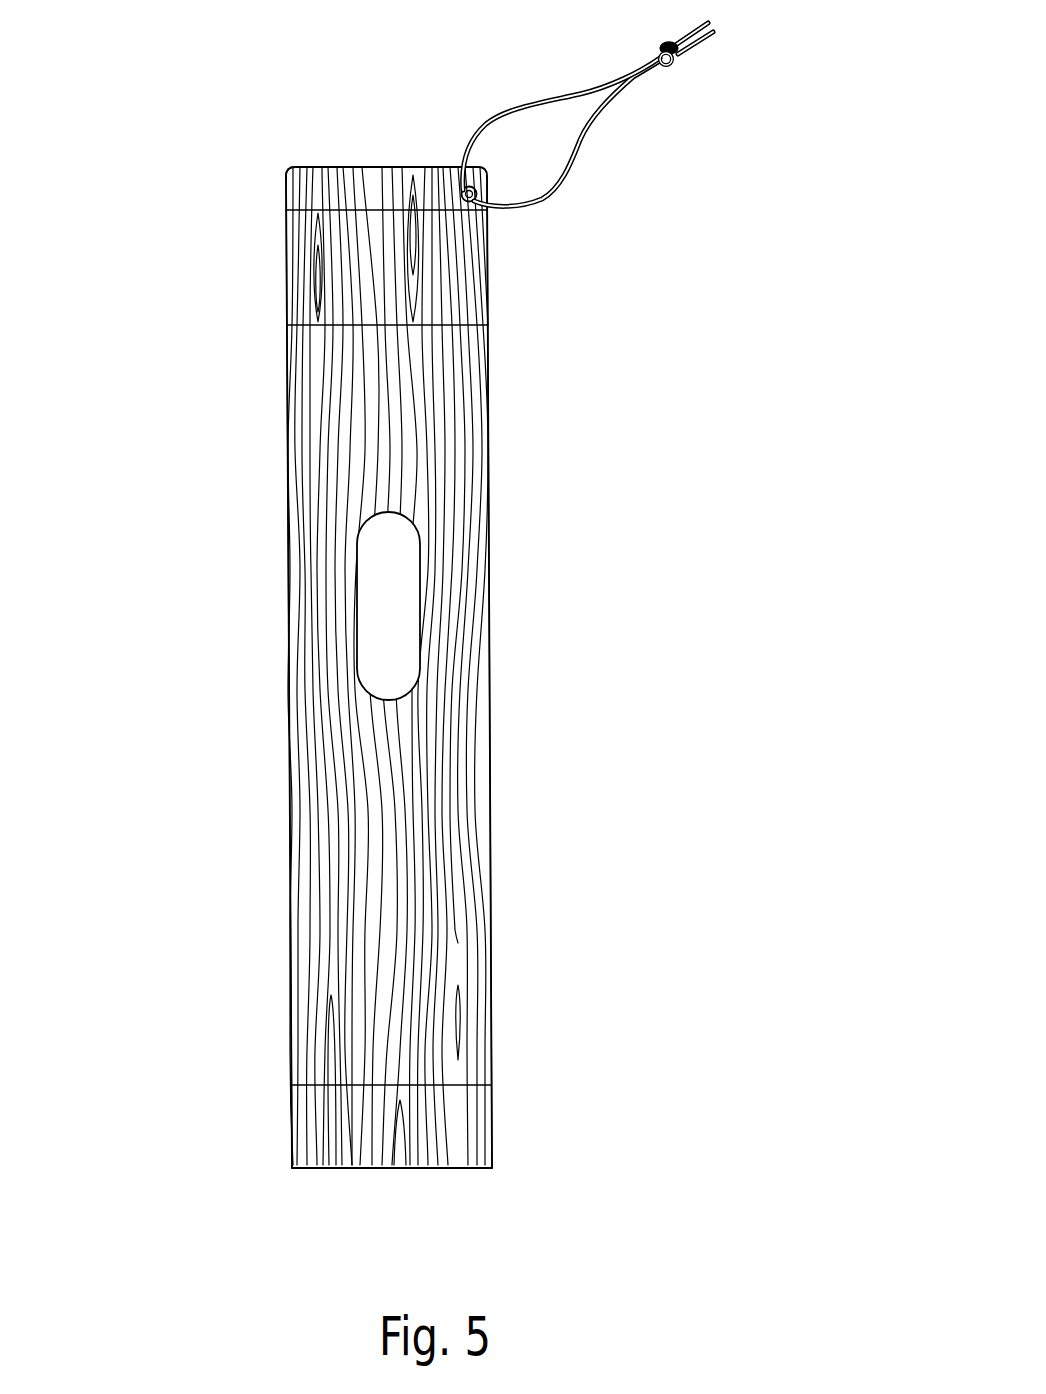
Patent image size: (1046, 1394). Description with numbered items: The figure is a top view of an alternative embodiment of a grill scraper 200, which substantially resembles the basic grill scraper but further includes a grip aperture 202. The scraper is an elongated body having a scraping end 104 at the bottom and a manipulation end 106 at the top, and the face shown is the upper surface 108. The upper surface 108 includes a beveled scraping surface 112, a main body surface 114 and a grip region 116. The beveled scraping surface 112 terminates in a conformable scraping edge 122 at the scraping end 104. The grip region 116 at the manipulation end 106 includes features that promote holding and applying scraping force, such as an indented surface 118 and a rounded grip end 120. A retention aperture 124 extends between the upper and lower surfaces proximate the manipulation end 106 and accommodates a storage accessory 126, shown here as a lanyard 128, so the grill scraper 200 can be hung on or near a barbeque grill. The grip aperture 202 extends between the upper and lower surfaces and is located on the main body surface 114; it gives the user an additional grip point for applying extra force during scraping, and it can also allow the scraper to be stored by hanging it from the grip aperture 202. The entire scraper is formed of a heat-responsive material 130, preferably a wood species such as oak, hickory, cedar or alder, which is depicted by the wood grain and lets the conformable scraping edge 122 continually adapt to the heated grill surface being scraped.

The scraping end 104 is at (348, 1168).
The manipulation end 106 is at (363, 167).
The upper surface 108 is at (355, 477).
The beveled scraping surface 112 is at (317, 1140).
The main body surface 114 is at (470, 935).
The grip region 116 is at (286, 240).
The indented surface 118 is at (318, 282).
The rounded grip end 120 is at (286, 169).
The conformable scraping edge 122 is at (473, 1168).
The retention aperture 124 is at (444, 185).
The storage accessory 126 is at (588, 131).
The lanyard 128 is at (582, 143).
The heat-responsive material 130 is at (312, 1118).
The grill scraper 200 is at (448, 636).
The grip aperture 202 is at (358, 657).